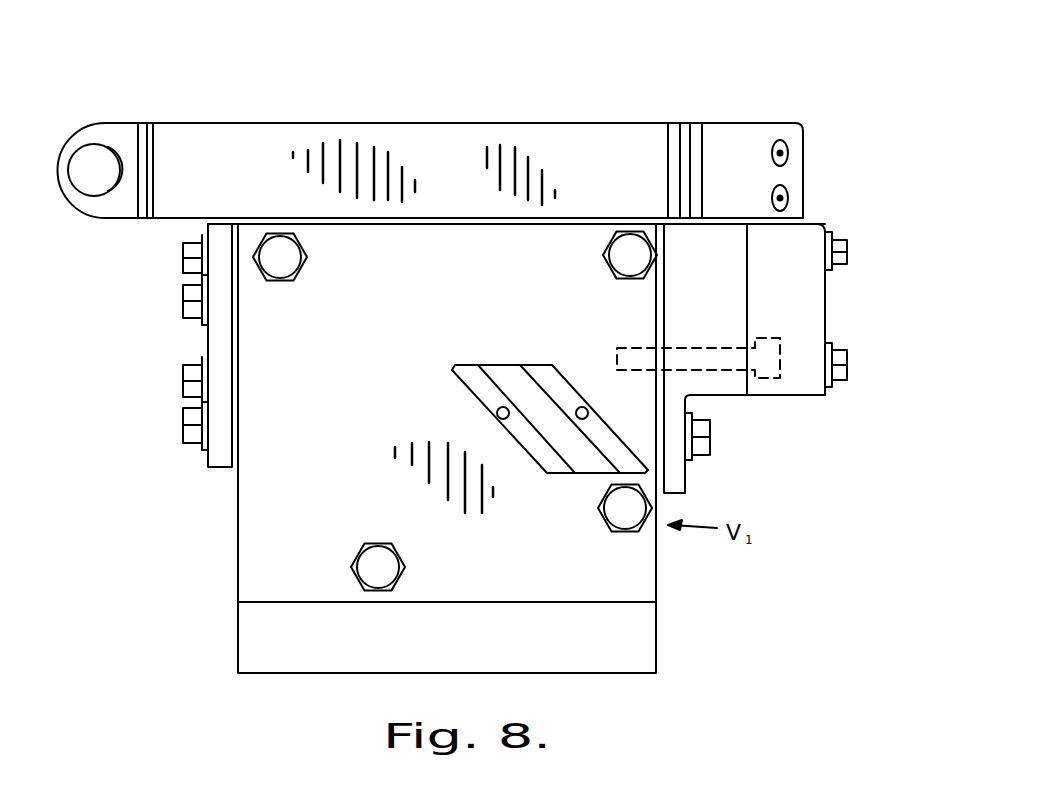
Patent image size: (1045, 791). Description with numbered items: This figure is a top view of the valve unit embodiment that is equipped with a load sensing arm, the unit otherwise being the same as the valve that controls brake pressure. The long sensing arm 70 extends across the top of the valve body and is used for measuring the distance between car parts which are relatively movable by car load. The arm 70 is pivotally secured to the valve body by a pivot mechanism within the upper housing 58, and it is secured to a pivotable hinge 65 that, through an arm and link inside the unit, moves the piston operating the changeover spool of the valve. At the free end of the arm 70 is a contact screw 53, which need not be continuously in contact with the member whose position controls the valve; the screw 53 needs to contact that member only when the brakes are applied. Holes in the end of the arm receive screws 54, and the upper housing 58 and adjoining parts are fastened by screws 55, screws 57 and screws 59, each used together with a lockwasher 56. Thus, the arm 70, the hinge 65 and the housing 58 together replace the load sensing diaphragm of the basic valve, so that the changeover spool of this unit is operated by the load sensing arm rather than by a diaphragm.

The sensing arm 70 is at (373, 128).
The contact screw 53 is at (103, 198).
The screw 54 is at (790, 155).
The hinge 65 is at (768, 226).
The upper housing 58 is at (825, 305).
The screw 55 is at (873, 370).
The lockwasher 56 is at (775, 363).
The screw 57 is at (710, 453).
The screw 59 is at (773, 378).